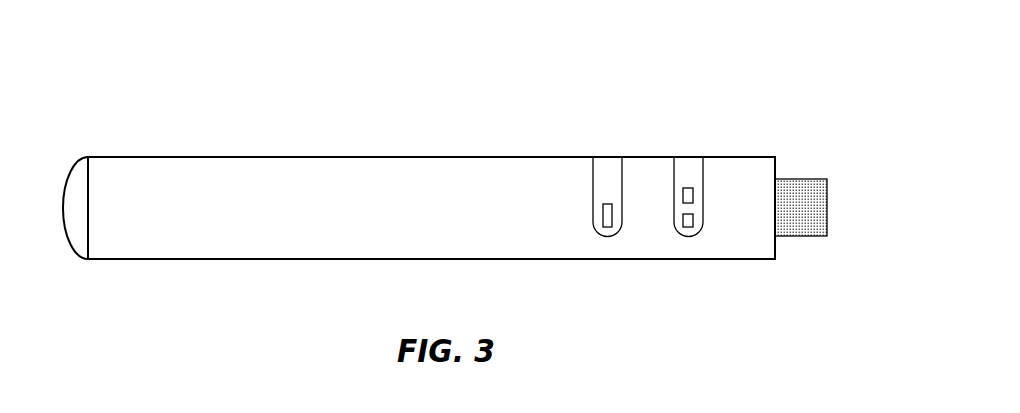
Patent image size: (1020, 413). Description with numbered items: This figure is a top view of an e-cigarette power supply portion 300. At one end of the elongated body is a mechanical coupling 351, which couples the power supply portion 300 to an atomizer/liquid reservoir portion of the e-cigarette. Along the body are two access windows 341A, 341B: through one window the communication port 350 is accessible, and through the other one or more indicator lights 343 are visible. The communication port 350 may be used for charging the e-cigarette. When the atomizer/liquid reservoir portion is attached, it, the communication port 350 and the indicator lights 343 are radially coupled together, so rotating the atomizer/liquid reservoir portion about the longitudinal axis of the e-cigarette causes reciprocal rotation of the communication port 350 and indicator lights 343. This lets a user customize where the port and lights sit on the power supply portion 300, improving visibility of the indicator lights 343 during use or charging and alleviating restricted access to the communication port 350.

The power supply portion 300 is at (362, 93).
The access window 341A is at (703, 178).
The access window 341B is at (622, 178).
The indicator lights 343 is at (683, 196).
The communication port 350 is at (602, 214).
The mechanical coupling 351 is at (827, 208).